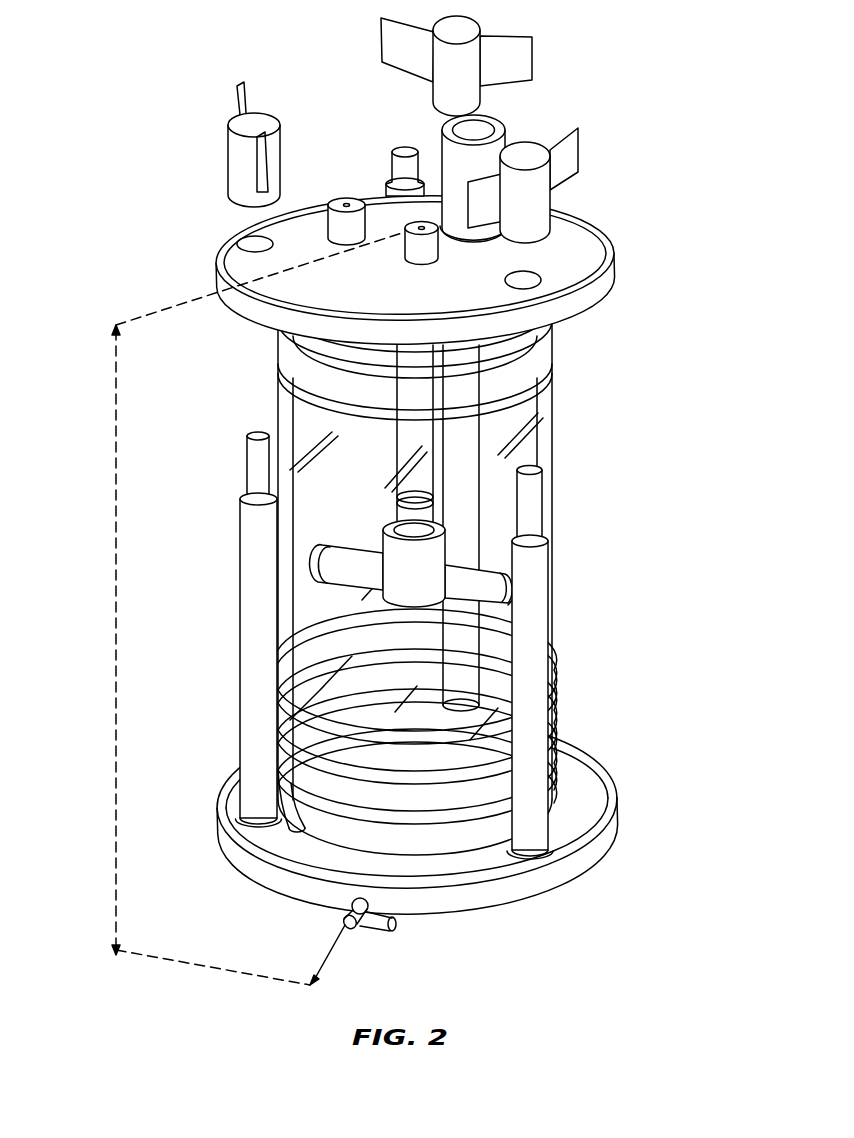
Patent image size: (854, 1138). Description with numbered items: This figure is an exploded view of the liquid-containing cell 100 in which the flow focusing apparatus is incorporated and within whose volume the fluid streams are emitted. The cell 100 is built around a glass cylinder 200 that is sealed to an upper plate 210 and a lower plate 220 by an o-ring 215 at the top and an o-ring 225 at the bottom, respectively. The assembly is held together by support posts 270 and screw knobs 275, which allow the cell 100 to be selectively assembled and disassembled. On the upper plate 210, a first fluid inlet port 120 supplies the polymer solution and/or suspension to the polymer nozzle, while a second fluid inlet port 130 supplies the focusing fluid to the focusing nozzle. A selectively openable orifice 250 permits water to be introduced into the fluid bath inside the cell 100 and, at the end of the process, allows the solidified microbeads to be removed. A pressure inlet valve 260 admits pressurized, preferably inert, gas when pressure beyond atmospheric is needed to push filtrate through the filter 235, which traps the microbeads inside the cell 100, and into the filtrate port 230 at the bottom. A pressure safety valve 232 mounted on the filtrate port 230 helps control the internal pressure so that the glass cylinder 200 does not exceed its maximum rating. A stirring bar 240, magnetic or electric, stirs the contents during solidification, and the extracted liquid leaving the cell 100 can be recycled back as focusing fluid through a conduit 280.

The liquid-containing cell 100 is at (152, 75).
The fluid inlet port 120 is at (340, 225).
The fluid inlet port 130 is at (450, 262).
The glass cylinder 200 is at (530, 457).
The upper plate 210 is at (565, 300).
The o-ring 215 is at (490, 372).
The lower plate 220 is at (580, 860).
The o-ring 225 is at (462, 775).
The filtrate port 230 is at (345, 927).
The pressure safety valve 232 is at (397, 930).
The filter 235 is at (300, 775).
The stirring bar 240 is at (360, 580).
The selectively openable orifice 250 is at (495, 125).
The pressure inlet valve 260 is at (404, 150).
The support posts 270 is at (530, 630).
The screw knobs 275 is at (470, 62).
The conduit 280 is at (113, 638).